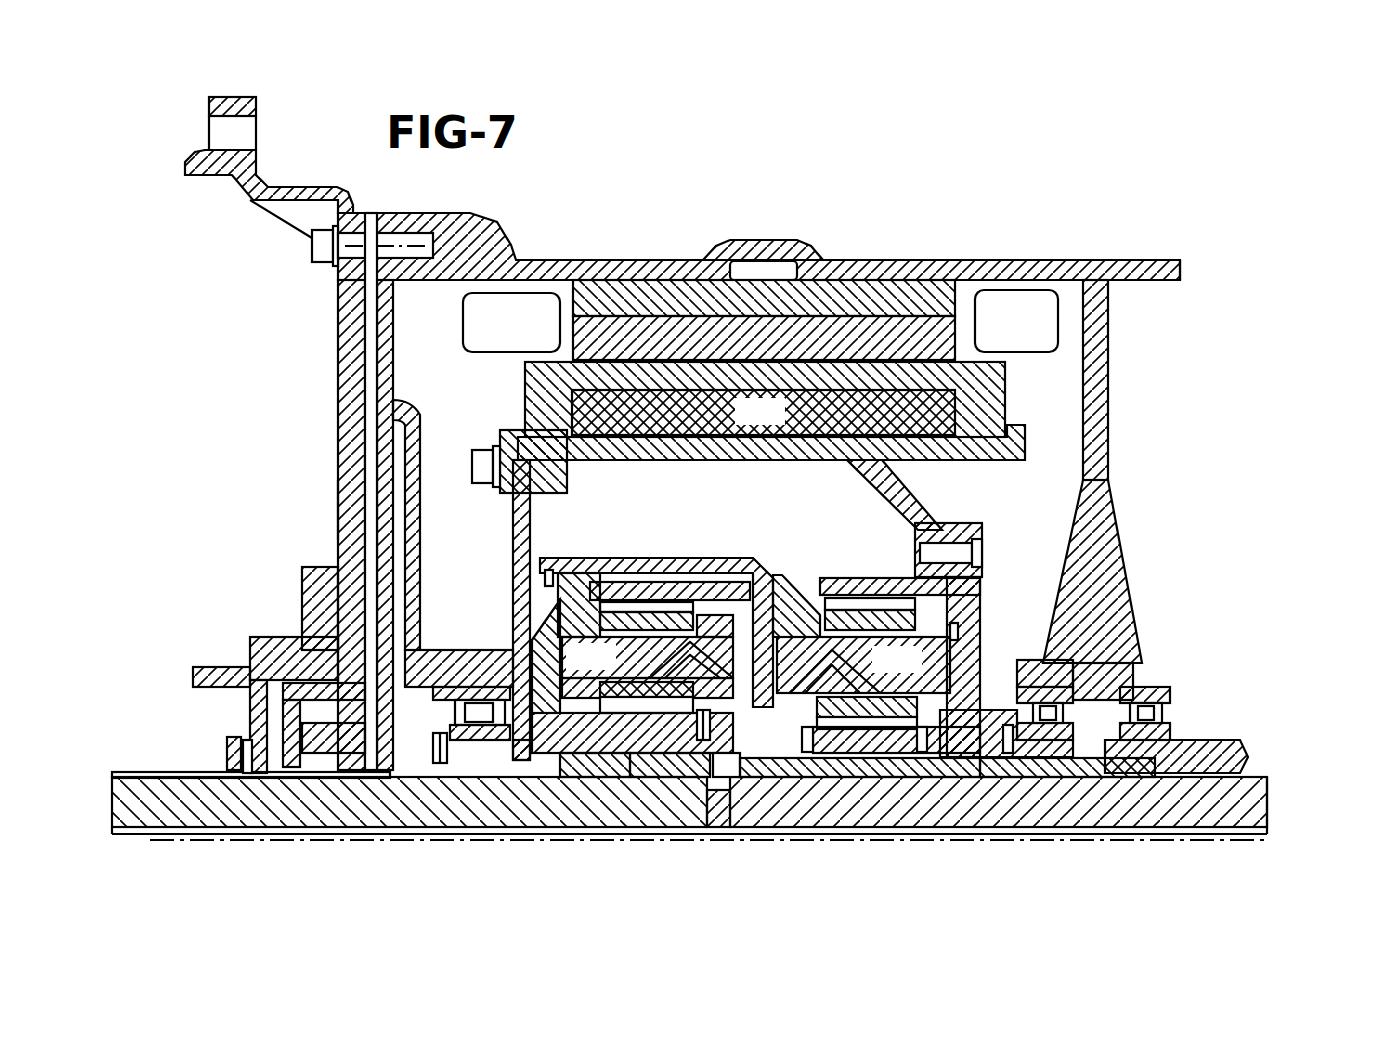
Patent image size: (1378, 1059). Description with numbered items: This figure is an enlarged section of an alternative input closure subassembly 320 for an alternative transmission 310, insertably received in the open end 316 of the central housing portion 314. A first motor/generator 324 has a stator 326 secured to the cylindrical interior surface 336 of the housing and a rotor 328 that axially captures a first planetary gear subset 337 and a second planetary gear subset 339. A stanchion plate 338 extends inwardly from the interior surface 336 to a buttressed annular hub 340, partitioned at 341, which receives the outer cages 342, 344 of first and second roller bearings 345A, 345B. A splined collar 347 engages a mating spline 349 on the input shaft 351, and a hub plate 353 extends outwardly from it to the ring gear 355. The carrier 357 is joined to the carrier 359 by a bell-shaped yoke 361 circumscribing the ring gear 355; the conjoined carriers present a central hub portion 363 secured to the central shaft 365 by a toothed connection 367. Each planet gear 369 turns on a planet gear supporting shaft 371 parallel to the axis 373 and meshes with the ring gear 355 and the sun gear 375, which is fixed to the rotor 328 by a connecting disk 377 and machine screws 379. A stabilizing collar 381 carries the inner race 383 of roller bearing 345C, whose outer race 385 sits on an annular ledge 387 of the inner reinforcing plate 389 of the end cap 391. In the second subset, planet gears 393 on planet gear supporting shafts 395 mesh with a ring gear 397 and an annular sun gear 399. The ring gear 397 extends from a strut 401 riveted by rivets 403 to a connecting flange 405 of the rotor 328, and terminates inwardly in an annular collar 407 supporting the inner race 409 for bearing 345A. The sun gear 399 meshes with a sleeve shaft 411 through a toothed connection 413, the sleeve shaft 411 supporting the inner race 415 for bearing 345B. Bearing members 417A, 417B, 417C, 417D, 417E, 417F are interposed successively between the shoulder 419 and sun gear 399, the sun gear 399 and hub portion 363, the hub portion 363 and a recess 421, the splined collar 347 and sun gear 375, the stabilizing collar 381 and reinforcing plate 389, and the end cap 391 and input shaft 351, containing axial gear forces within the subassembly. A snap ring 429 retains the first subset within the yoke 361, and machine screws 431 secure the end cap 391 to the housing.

The transmission 310 is at (1170, 226).
The central housing portion 314 is at (858, 256).
The open end 316 is at (428, 332).
The input closure subassembly 320 is at (326, 318).
The first motor/generator 324 is at (498, 380).
The stator 326 is at (680, 300).
The rotor 328 is at (739, 426).
The interior surface 336 is at (565, 276).
The first planetary gear subset 337 is at (688, 554).
The stanchion plate 338 is at (1106, 380).
The second planetary gear subset 339 is at (846, 572).
The buttressed annular hub 340 is at (1102, 686).
The partition 341 is at (1122, 700).
The outer cage 342 is at (1066, 652).
The outer cage 344 is at (1170, 694).
The first roller bearing 345A is at (1082, 682).
The second roller bearing 345B is at (1174, 712).
The roller bearing 345C is at (480, 738).
The splined collar 347 is at (622, 764).
The mating spline 349 is at (640, 772).
The input shaft 351 is at (330, 806).
The hub plate 353 is at (760, 630).
The ring gear 355 is at (640, 590).
The carrier 357 is at (556, 620).
The carrier 359 is at (797, 612).
The bell-shaped yoke 361 is at (600, 560).
The central hub portion 363 is at (790, 770).
The central shaft 365 is at (1202, 806).
The toothed connection 367 is at (778, 772).
The planet gear 369 is at (572, 592).
The planet gear supporting shaft 371 is at (570, 670).
The axis 373 is at (216, 846).
The sun gear 375 is at (610, 742).
The connecting disk 377 is at (512, 542).
The machine screws 379 is at (478, 464).
The stabilizing collar 381 is at (518, 724).
The inner race 383 is at (455, 742).
The outer race 385 is at (500, 690).
The annular ledge 387 is at (470, 665).
The inner reinforcing plate 389 is at (415, 496).
The end cap 391 is at (345, 508).
The planet gears 393 is at (885, 612).
The planet gear supporting shaft 395 is at (876, 673).
The ring gear 397 is at (905, 525).
The sun gear 399 is at (1000, 750).
The strut 401 is at (976, 606).
The rivets 403 is at (980, 550).
The connecting flange 405 is at (896, 490).
The annular collar 407 is at (1050, 754).
The inner race 409 is at (1100, 762).
The sleeve shaft 411 is at (1234, 748).
The toothed connection 413 is at (962, 758).
The inner race 415 is at (1246, 800).
The bearing member 417A is at (1008, 754).
The second bearing member 417B is at (922, 752).
The third bearing member 417C is at (808, 752).
The fourth bearing member 417D is at (703, 746).
The fifth bearing member 417E is at (440, 756).
The sixth bearing member 417F is at (243, 762).
The shoulder 419 is at (985, 700).
The recess 421 is at (725, 640).
The snap ring 429 is at (545, 585).
The machine screws 431 is at (330, 241).